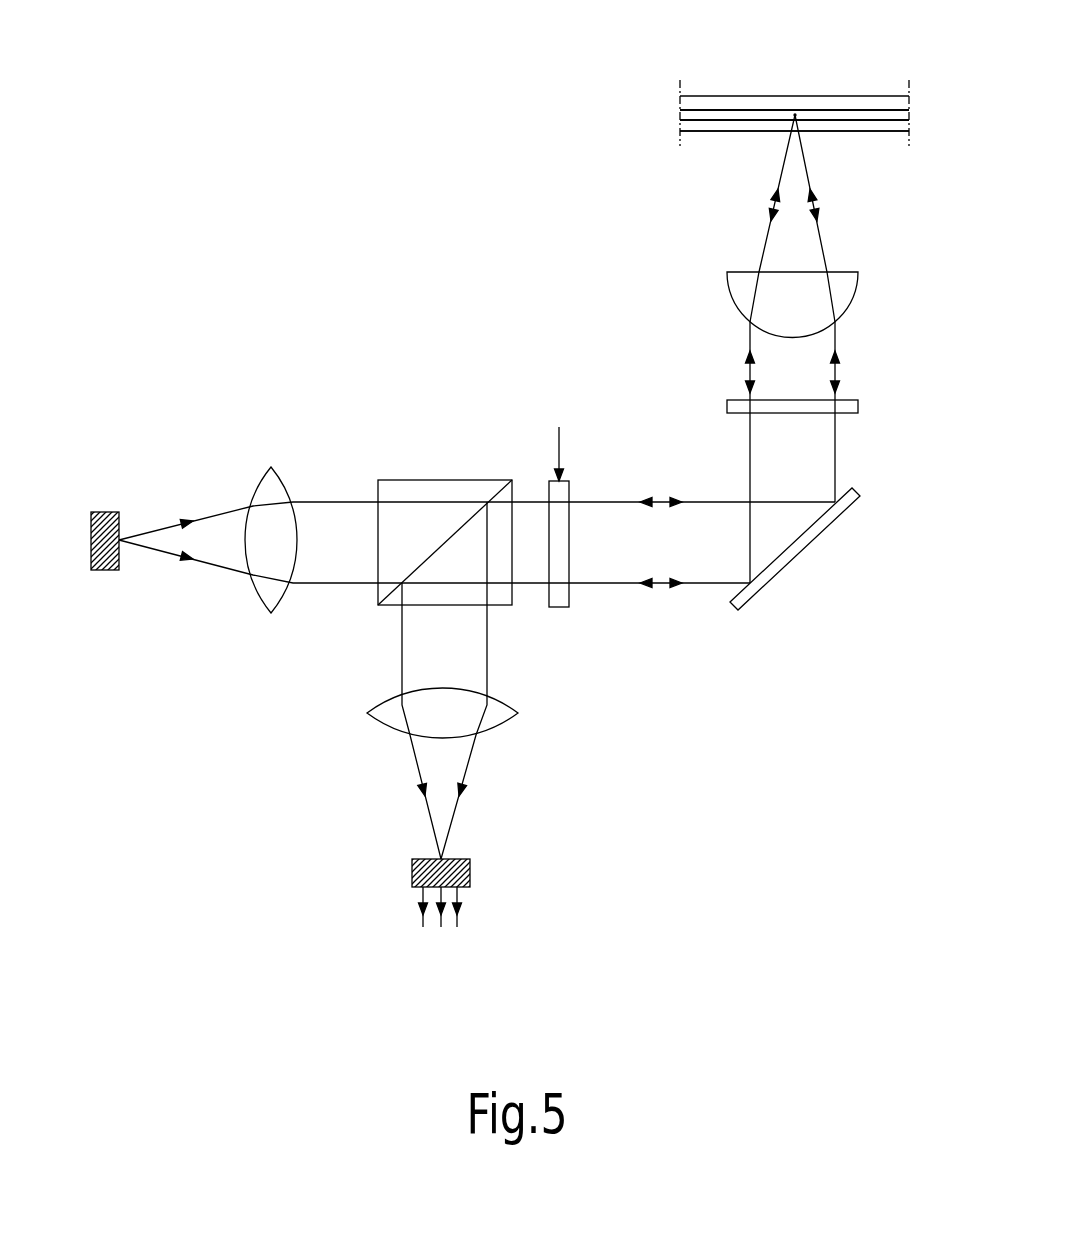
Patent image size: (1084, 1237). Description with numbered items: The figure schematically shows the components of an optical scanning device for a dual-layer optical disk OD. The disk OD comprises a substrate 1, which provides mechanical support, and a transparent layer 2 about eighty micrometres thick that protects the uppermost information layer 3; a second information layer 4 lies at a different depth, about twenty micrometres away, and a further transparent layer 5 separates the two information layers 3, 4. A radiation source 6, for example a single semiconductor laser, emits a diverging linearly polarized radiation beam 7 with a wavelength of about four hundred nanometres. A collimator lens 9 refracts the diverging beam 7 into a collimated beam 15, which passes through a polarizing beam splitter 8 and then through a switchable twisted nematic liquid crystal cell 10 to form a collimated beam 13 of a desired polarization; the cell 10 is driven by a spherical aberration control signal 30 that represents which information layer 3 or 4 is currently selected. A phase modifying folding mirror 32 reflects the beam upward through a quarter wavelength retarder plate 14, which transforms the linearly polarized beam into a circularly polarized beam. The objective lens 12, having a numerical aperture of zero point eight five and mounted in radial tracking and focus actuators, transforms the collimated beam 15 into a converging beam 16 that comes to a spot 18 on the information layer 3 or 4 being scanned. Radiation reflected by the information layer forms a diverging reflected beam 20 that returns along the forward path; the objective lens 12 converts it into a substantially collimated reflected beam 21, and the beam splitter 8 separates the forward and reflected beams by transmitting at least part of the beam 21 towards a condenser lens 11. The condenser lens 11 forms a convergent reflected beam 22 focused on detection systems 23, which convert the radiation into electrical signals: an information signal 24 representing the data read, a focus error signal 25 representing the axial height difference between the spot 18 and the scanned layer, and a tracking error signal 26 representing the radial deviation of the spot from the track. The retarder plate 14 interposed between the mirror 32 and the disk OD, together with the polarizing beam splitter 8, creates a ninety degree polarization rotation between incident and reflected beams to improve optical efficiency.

The optical disk OD is at (658, 76).
The substrate 1 is at (846, 97).
The transparent layer 2 is at (735, 130).
The information layer 3 is at (703, 120).
The information layer 4 is at (765, 110).
The further transparent layer 5 is at (692, 121).
The spot 18 is at (795, 115).
The converging beam 16 is at (773, 195).
The diverging reflected beam 20 is at (822, 216).
The objective lens 12 is at (859, 292).
The collimated beam 15 is at (748, 355).
The collimated reflected beam 21 is at (838, 385).
The quarter wavelength retarder plate 14 is at (859, 407).
The folding mirror 32 is at (857, 490).
The collimated beam 13 is at (676, 500).
The twisted nematic liquid crystal cell 10 is at (570, 490).
The spherical aberration control signal 30 is at (562, 438).
The beam splitter 8 is at (448, 480).
The collimator lens 9 is at (281, 478).
The radiation source 6 is at (108, 512).
The diverging radiation beam 7 is at (192, 520).
The condenser lens 11 is at (386, 700).
The convergent reflected beam 22 is at (415, 790).
The detection systems 23 is at (412, 875).
The information signal 24 is at (423, 918).
The focus error signal 25 is at (441, 929).
The tracking error signal 26 is at (459, 918).